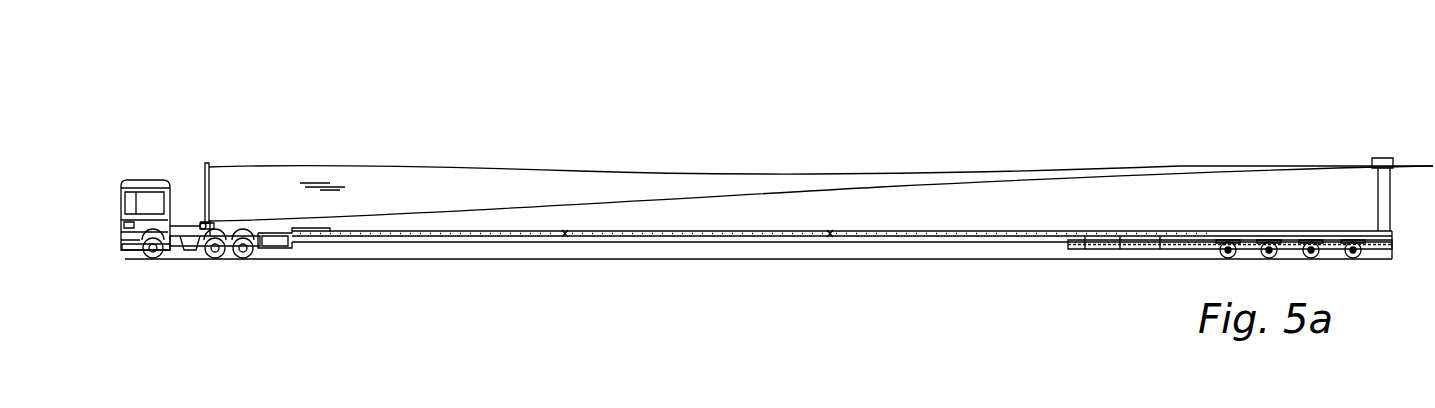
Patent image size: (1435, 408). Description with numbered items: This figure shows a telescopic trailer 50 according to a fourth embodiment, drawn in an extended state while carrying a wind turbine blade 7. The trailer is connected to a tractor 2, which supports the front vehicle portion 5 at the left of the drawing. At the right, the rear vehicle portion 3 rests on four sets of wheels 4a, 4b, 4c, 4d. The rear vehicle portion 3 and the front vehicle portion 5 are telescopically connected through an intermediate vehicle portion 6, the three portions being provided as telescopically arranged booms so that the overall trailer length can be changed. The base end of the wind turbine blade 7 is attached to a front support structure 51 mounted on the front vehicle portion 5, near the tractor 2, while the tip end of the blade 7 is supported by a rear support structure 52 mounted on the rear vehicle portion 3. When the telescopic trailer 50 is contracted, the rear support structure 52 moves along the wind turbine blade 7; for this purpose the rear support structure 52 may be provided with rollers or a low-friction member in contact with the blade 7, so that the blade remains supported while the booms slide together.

The tractor 2 is at (163, 178).
The rear vehicle portion 3 is at (918, 240).
The set of wheels 4a is at (1228, 241).
The set of wheels 4b is at (1269, 241).
The set of wheels 4c is at (1311, 241).
The set of wheels 4d is at (1353, 241).
The front vehicle portion 5 is at (489, 238).
The intermediate vehicle portion 6 is at (709, 235).
The wind turbine blade 7 is at (541, 188).
The telescopic trailer 50 is at (818, 278).
The front support structure 51 is at (191, 178).
The rear support structure 52 is at (1384, 158).